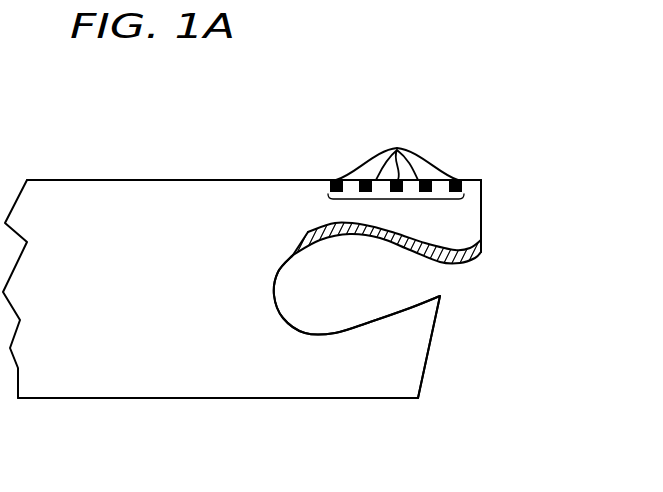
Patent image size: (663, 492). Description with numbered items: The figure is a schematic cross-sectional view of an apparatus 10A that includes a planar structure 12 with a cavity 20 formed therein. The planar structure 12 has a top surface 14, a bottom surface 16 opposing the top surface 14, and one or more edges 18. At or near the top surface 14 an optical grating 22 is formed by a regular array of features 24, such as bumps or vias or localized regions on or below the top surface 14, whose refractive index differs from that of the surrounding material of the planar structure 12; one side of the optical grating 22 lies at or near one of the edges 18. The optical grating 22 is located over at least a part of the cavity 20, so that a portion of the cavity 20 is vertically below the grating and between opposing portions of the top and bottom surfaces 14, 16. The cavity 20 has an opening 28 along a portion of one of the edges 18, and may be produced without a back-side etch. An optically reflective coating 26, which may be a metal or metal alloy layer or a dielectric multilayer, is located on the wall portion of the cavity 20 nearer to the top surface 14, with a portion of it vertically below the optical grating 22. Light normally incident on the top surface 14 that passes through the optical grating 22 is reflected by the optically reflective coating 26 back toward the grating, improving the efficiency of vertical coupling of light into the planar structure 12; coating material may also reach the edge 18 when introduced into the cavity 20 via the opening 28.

The apparatus 10A is at (292, 134).
The planar structure 12 is at (150, 300).
The top surface 14 is at (127, 180).
The bottom surface 16 is at (165, 398).
The edge 18 is at (482, 213).
The cavity 20 is at (355, 300).
The optical grating 22 is at (397, 199).
The features 24 is at (397, 146).
The optically reflective coating 26 is at (300, 244).
The opening 28 is at (455, 287).